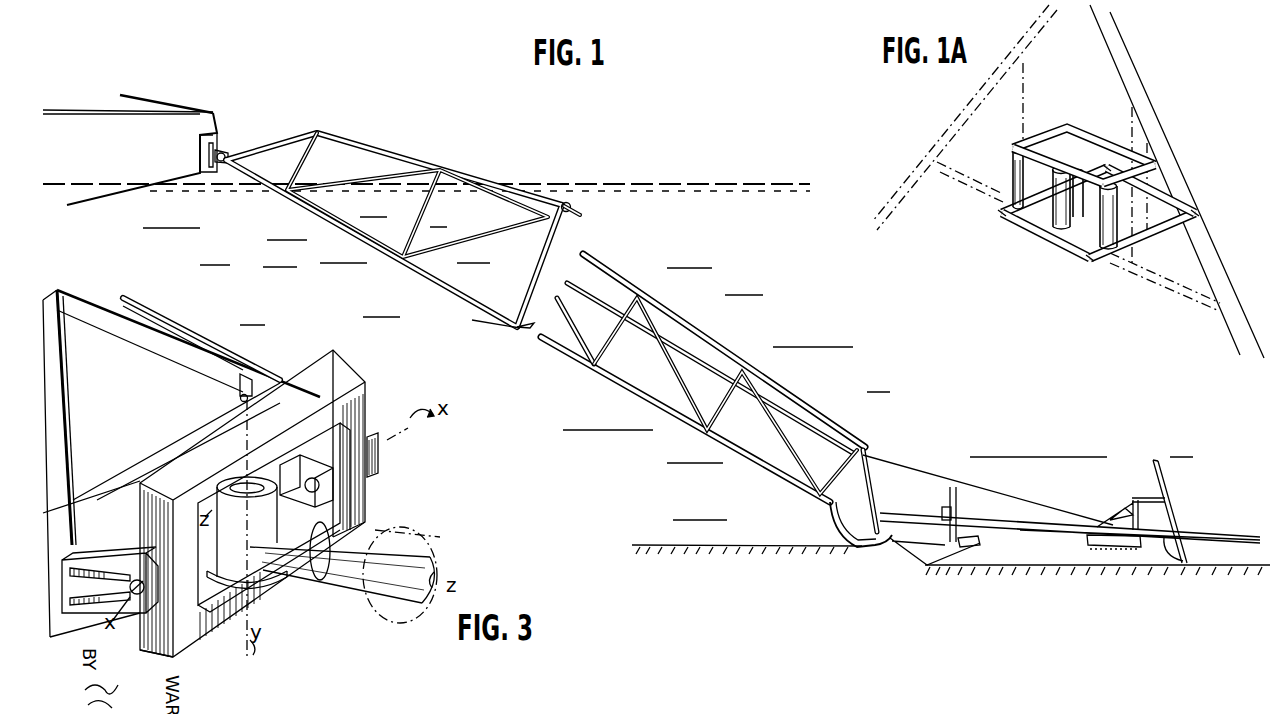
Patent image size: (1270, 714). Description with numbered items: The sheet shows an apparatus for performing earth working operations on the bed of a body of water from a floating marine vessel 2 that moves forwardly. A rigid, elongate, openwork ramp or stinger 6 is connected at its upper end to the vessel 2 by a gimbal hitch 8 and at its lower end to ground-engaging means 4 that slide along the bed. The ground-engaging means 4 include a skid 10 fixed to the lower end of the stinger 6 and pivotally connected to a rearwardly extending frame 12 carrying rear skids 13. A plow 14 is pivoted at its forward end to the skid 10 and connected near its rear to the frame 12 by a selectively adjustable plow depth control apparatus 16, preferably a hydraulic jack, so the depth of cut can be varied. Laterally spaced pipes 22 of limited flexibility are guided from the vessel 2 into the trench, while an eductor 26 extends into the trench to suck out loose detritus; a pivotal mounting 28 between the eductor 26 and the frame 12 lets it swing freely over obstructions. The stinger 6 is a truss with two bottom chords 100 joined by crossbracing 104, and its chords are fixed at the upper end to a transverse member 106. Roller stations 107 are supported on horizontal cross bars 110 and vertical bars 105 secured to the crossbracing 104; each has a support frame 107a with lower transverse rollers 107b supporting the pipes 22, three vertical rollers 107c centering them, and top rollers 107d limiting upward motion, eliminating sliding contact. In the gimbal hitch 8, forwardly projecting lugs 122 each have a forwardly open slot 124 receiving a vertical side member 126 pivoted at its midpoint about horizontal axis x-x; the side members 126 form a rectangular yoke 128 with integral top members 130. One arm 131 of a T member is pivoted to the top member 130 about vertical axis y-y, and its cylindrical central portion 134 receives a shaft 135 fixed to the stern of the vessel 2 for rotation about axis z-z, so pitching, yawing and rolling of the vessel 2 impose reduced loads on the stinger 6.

In FIG. 1, the floating marine vessel 2 is at (96, 125).
In FIG. 1, the ground-engaging means 4 is at (1034, 521).
In FIG. 1, the ramp (stinger) 6 is at (641, 273).
In FIG. 1, the gimbal hitch 8 is at (225, 177).
In FIG. 3, the gimbal hitch 8 is at (381, 483).
In FIG. 1, the skid 10 is at (840, 524).
In FIG. 1, the frame 12 is at (1061, 540).
In FIG. 1, the rear skids 13 is at (1118, 549).
In FIG. 1, the plow 14 is at (930, 560).
In FIG. 1, the plow depth control apparatus 16 is at (968, 511).
In FIG. 1, the pipes 22 is at (284, 131).
In FIG. 1, the eductor 26 is at (1174, 509).
In FIG. 1, the pivotal mounting 28 is at (1148, 498).
In FIG. 1, the bottom chords 100 is at (480, 312).
In FIG. 3, the bottom chords 100 is at (216, 347).
In FIG. 1A, the crossbracing 104 is at (1175, 140).
In FIG. 1A, the vertical bars 105 is at (1028, 95).
In FIG. 3, the member 106 is at (127, 476).
In FIG. 1A, the roller frames (roller stations) 107 is at (1071, 204).
In FIG. 1A, the support frame 107a is at (1106, 262).
In FIG. 1A, the rollers 107b is at (1022, 236).
In FIG. 1A, the vertically disposed rollers 107c is at (992, 205).
In FIG. 1A, the top rollers 107d is at (1108, 123).
In FIG. 1A, the horizontal cross bars 110 is at (980, 175).
In FIG. 3, the lugs 122 is at (137, 598).
In FIG. 3, the slot 124 is at (137, 535).
In FIG. 3, the side members 126 is at (357, 515).
In FIG. 3, the rectangular yoke 128 is at (337, 386).
In FIG. 3, the top members 130 is at (203, 426).
In FIG. 3, the arm 131 is at (266, 582).
In FIG. 3, the central portion (cylindrical member) 134 is at (302, 538).
In FIG. 3, the shaft 135 is at (434, 551).